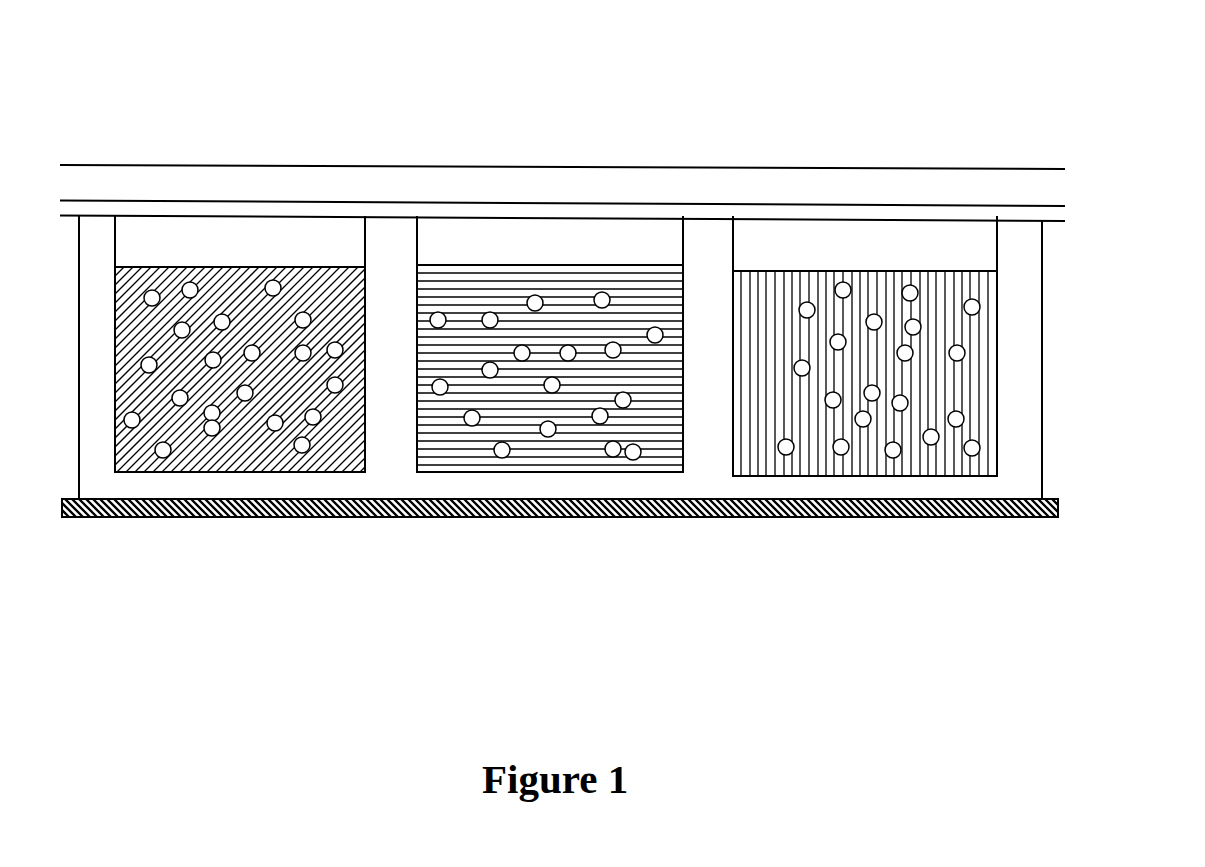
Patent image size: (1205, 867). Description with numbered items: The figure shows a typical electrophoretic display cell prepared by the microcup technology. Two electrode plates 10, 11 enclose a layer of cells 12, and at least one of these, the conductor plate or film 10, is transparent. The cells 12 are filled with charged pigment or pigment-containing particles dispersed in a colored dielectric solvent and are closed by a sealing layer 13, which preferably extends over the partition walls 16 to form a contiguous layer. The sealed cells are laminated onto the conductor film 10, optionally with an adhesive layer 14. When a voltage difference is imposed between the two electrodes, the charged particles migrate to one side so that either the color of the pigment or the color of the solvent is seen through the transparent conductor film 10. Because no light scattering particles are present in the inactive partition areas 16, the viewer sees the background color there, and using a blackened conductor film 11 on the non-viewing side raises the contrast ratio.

The transparent electrode plate 10 is at (817, 168).
The electrode plate 11 is at (1058, 515).
The layer of cells 12 is at (975, 371).
The sealing layer 13 is at (917, 247).
The adhesive layer 14 is at (1055, 213).
The partition walls 16 is at (708, 248).